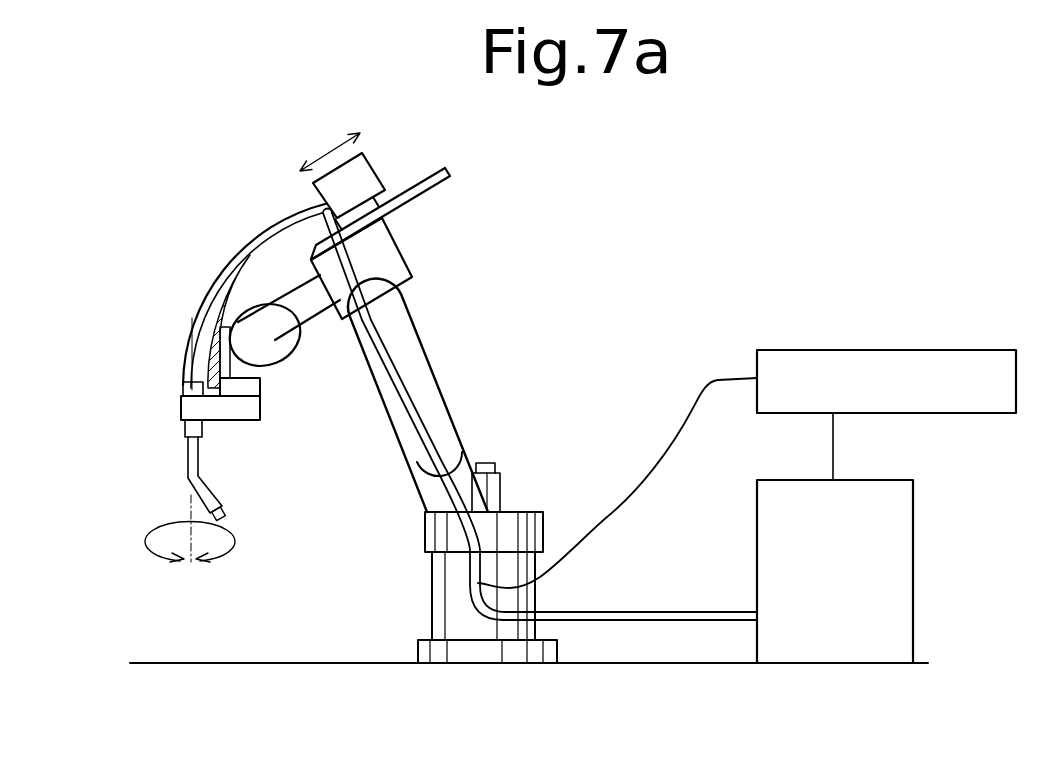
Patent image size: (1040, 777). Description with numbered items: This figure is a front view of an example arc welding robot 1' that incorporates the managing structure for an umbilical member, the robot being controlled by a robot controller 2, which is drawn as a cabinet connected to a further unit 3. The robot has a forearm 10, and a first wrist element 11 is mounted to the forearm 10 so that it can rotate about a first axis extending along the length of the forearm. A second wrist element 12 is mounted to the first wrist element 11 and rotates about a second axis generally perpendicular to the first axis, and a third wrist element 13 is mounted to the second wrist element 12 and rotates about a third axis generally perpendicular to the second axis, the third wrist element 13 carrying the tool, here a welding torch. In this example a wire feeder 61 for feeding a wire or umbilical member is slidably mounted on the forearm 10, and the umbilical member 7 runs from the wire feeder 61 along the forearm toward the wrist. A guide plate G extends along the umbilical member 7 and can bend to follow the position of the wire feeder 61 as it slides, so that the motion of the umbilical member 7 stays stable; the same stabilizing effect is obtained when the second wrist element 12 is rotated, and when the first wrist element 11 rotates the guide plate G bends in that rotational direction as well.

The arc welding robot 1' is at (432, 395).
The robot controller 2 is at (936, 548).
The processing / display unit 3 is at (921, 332).
The umbilical member 7 is at (264, 220).
The forearm 10 is at (388, 262).
The first wrist element 11 is at (277, 342).
The second wrist element 12 is at (252, 375).
The third wrist element 13 is at (253, 391).
The wire feeder 61 is at (358, 179).
The guide plate G is at (210, 345).